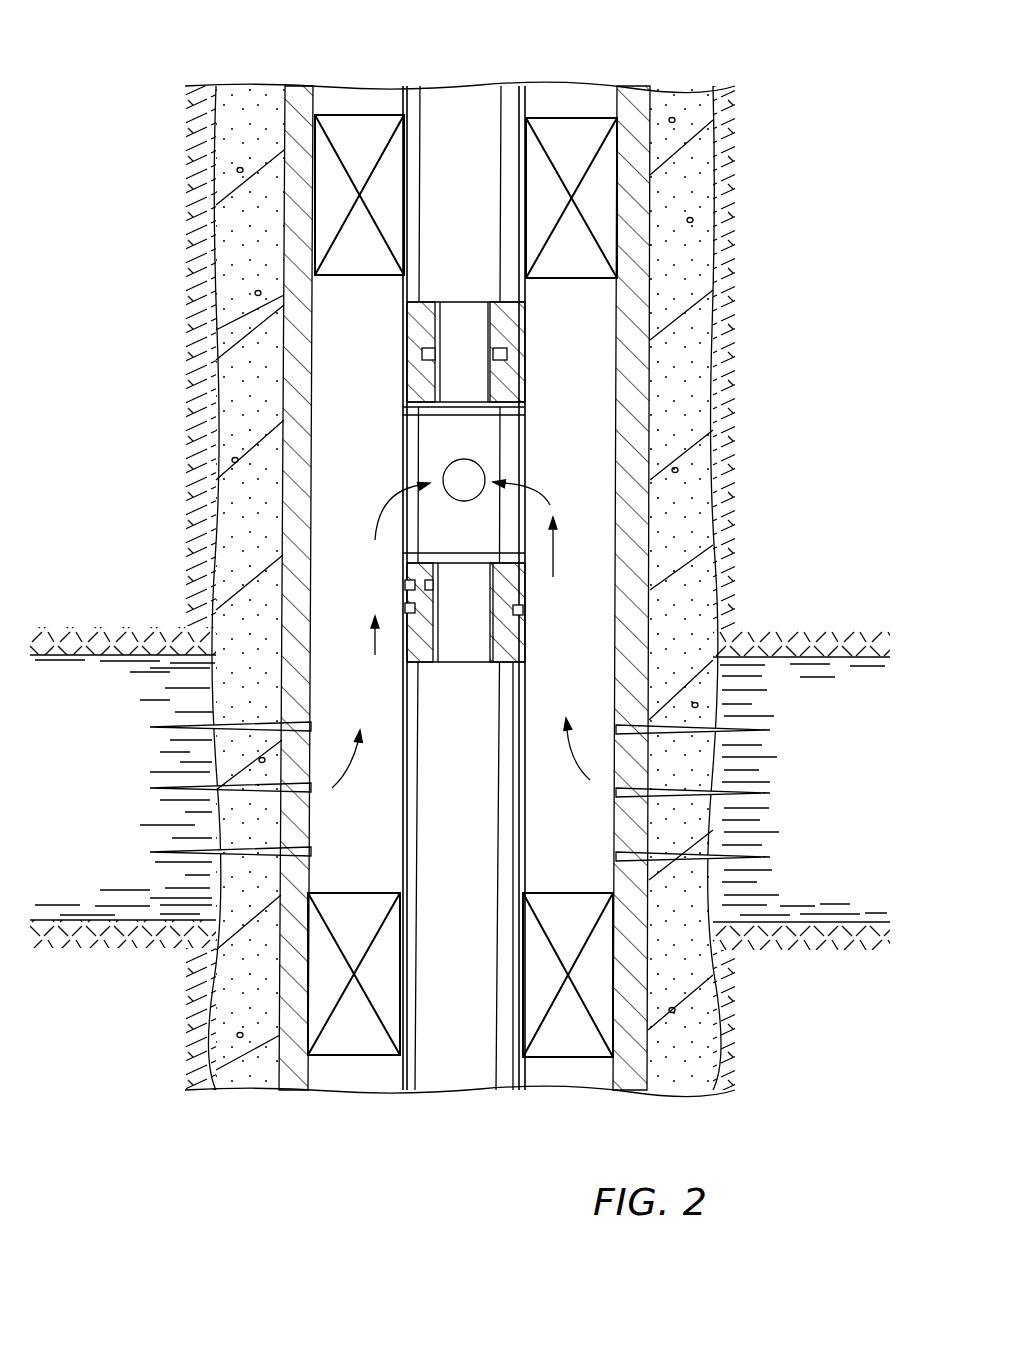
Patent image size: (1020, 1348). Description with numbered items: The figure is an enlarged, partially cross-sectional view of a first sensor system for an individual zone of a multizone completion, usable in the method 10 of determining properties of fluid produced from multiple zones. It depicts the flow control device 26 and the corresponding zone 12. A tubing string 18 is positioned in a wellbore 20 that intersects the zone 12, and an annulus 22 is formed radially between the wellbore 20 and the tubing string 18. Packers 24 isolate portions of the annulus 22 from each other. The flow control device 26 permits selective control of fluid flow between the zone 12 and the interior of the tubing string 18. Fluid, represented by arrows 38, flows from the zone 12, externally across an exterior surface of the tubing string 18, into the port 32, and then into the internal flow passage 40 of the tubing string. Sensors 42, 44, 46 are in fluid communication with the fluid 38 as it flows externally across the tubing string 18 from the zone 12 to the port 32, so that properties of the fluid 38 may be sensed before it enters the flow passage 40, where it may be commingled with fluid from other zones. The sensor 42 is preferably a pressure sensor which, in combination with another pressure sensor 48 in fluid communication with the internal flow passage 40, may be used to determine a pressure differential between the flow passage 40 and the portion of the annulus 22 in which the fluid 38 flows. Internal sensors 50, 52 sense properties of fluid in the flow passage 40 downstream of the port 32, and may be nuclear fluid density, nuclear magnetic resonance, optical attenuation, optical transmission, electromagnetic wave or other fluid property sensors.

The method 10 is at (760, 47).
The zone 12 is at (824, 690).
The tubing string 18 is at (402, 693).
The wellbore 20 is at (312, 326).
The annulus 22 is at (600, 298).
The packers 24 is at (313, 200).
The flow control device 26 is at (408, 425).
The port 32 is at (470, 470).
The fluid 38 is at (400, 497).
The internal flow passage 40 is at (478, 358).
The sensor 42 is at (405, 585).
The sensor 44 is at (405, 608).
The sensor 46 is at (525, 610).
The pressure sensor 48 is at (430, 588).
The internal sensor 50 is at (422, 354).
The internal sensor 52 is at (507, 355).